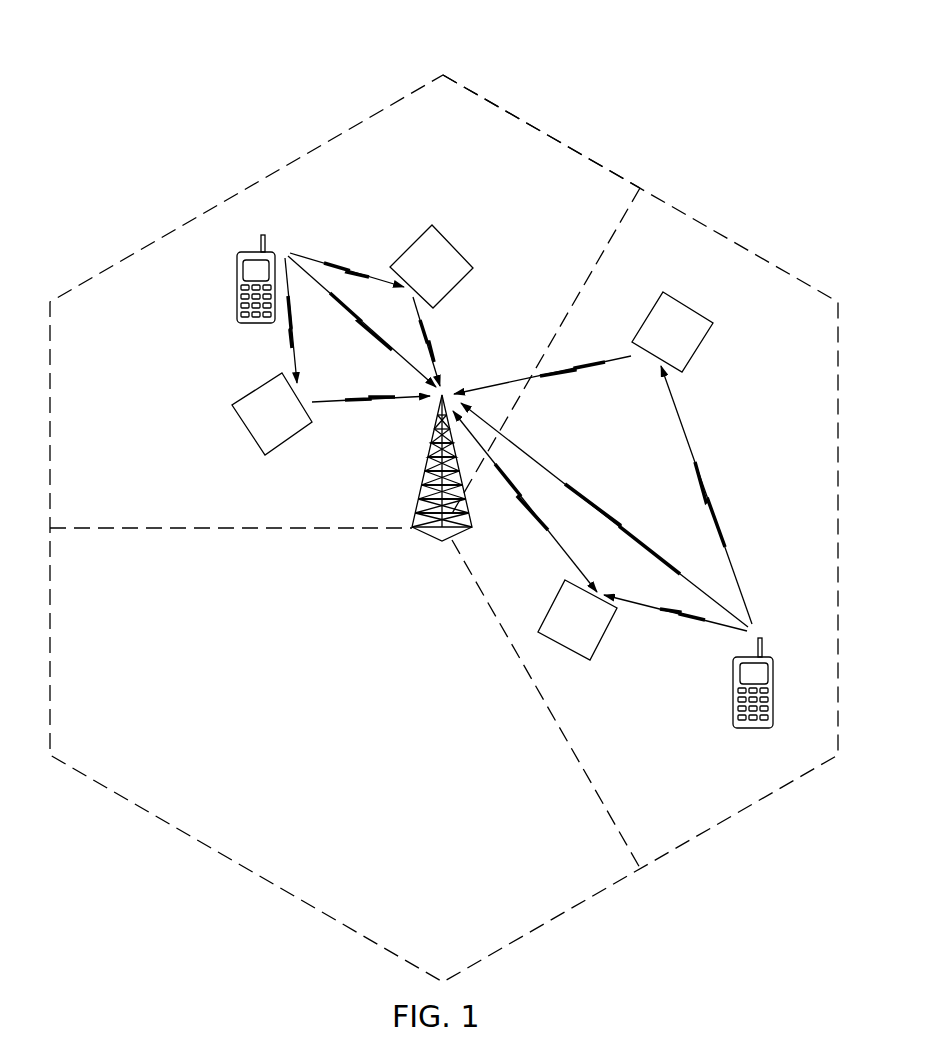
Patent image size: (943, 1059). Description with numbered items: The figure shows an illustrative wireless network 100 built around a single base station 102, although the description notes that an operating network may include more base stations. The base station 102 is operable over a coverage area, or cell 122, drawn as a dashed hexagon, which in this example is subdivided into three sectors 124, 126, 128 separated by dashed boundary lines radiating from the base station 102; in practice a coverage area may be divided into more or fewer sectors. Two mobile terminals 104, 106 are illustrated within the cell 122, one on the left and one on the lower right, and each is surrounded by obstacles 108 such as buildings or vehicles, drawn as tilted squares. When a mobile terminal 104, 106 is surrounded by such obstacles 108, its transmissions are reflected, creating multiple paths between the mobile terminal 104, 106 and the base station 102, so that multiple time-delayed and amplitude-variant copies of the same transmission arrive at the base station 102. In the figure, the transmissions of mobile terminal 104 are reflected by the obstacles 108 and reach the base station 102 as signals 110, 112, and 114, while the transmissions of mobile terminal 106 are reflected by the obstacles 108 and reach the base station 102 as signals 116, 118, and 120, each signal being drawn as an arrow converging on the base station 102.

The wireless network 100 is at (286, 96).
The base station 102 is at (420, 533).
The mobile terminal 104 is at (237, 291).
The mobile terminal 106 is at (733, 706).
The obstacles 108 is at (245, 445).
The signal 110 is at (375, 325).
The signal 112 is at (357, 410).
The signal 114 is at (434, 354).
The signal 116 is at (573, 374).
The signal 118 is at (565, 485).
The signal 120 is at (546, 528).
The coverage area (cell) 122 is at (676, 204).
The sector 124 is at (177, 373).
The sector 126 is at (363, 710).
The sector 128 is at (815, 542).